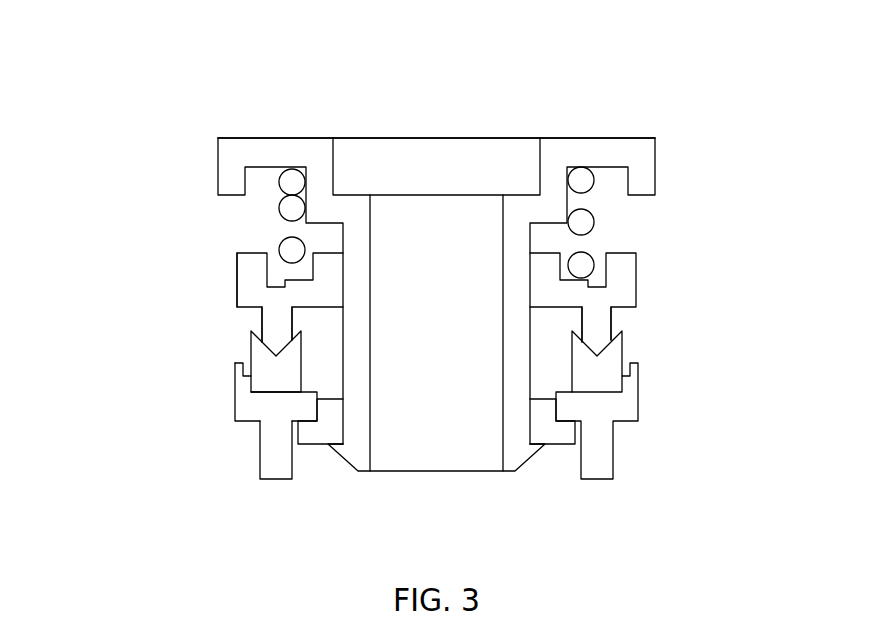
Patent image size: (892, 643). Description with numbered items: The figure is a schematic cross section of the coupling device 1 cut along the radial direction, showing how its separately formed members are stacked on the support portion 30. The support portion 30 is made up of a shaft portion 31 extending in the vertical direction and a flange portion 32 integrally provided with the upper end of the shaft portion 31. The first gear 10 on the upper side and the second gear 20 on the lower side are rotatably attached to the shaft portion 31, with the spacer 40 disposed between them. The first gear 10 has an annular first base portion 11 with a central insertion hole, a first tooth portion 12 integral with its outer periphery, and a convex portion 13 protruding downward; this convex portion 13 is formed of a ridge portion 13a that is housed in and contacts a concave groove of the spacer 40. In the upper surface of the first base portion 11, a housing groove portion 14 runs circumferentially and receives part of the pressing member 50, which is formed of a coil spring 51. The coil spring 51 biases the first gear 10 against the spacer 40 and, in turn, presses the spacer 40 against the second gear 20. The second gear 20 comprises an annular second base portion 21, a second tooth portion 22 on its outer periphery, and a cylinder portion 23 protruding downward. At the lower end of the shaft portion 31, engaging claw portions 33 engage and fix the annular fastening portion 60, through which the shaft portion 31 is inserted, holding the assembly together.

The coupling device 1 is at (213, 70).
The first gear 10 is at (637, 277).
The first base portion 11 is at (300, 296).
The first tooth portion 12 is at (237, 273).
The convex portion 13 is at (433, 324).
The ridge portion 13a is at (275, 320).
The housing groove portion 14 is at (272, 250).
The second gear 20 is at (640, 390).
The second base portion 21 is at (275, 412).
The second tooth portion 22 is at (233, 382).
The cylinder portion 23 is at (268, 463).
The support portion 30 is at (479, 255).
The shaft portion 31 is at (594, 138).
The flange portion 32 is at (502, 433).
The engaging claw portions 33 is at (540, 447).
The spacer 40 is at (624, 345).
The pressing member 50 is at (518, 222).
The coil spring 51 is at (594, 222).
The fastening portion 60 is at (557, 448).